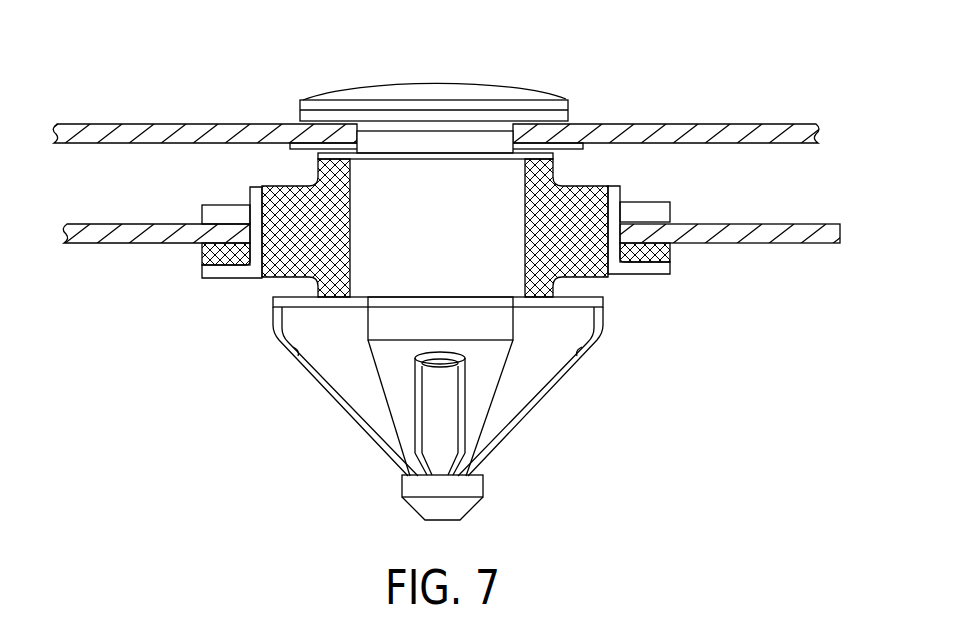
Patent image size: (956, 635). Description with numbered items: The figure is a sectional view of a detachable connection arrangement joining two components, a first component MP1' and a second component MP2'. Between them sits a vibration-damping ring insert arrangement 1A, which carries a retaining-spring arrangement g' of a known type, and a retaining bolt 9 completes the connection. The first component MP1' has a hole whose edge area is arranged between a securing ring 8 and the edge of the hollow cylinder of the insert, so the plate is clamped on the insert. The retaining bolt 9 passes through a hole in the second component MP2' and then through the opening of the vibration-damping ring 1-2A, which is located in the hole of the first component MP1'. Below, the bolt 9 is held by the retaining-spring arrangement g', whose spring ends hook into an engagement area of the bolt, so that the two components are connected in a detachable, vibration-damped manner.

The retaining bolt 9 is at (478, 150).
The second component MP2' is at (436, 107).
The first component MP1' is at (451, 259).
The vibration-damping ring insert arrangement 1A is at (588, 174).
The securing ring 8 is at (653, 208).
The vibration-damping ring 1-2A is at (576, 258).
The retaining-spring arrangement g' is at (439, 408).